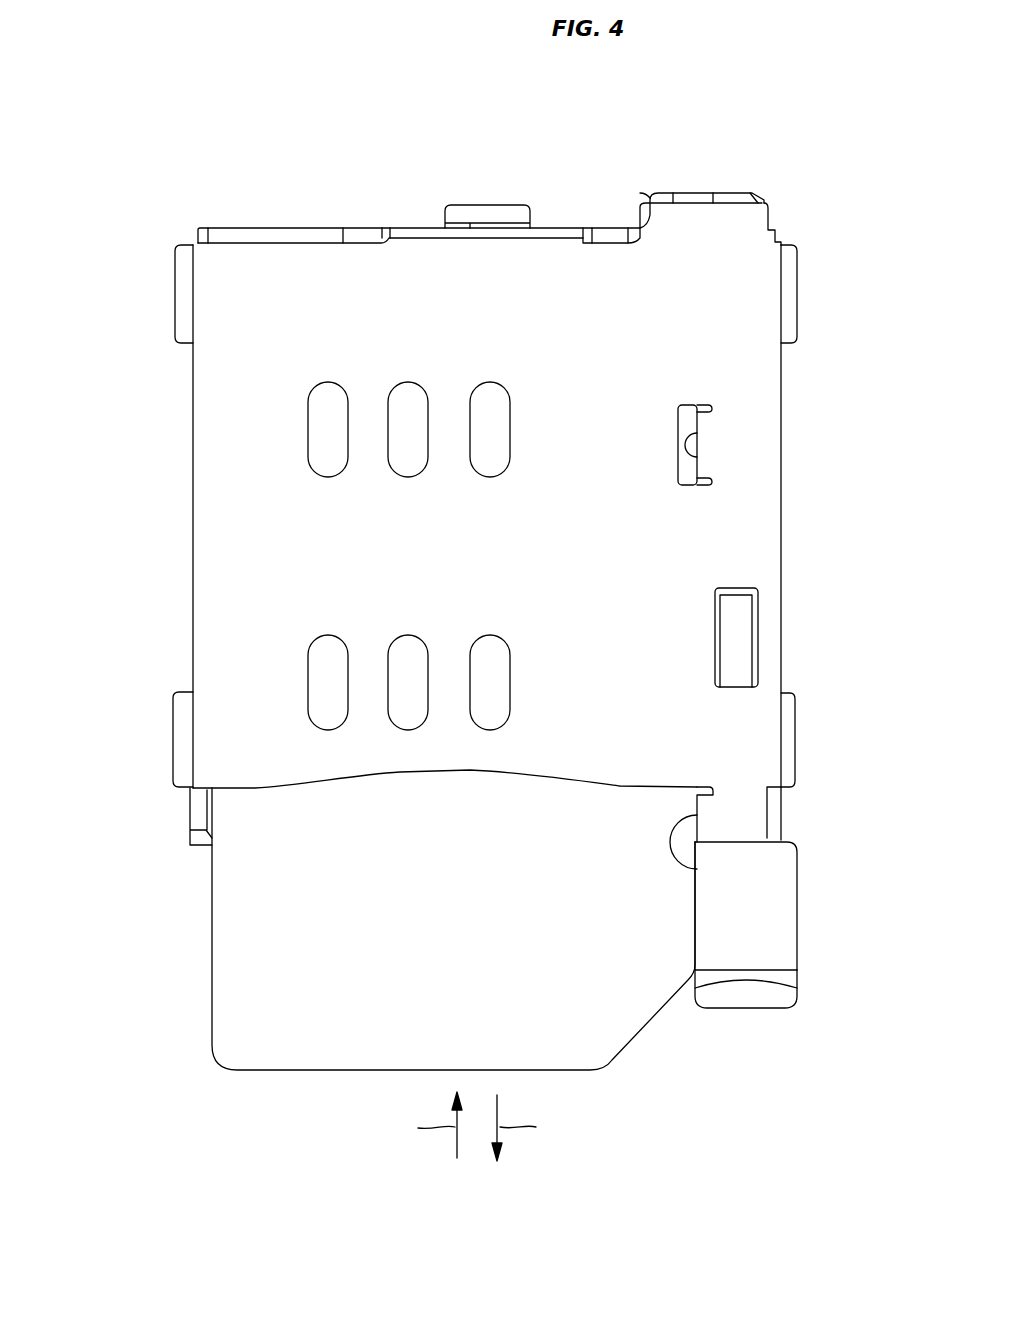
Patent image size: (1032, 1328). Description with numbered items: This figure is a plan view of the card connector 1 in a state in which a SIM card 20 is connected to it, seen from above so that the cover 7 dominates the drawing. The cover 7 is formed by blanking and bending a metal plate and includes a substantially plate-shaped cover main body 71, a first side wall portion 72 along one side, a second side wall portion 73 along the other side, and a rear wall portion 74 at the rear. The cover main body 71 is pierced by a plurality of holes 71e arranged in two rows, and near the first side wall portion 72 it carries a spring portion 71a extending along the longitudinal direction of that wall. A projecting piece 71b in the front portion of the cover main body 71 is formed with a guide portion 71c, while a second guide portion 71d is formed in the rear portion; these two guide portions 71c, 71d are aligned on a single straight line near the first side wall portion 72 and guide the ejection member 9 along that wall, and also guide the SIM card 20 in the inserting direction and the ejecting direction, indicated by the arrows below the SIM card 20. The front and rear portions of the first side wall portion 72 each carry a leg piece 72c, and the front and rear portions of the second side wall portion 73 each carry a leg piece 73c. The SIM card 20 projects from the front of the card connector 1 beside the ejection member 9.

The card connector 1 is at (406, 148).
The cover 7 is at (168, 488).
The ejection member 9 is at (757, 1031).
The SIM card 20 is at (347, 1102).
The cover main body 71 is at (551, 272).
The spring portion 71a is at (738, 635).
The projecting piece 71b is at (740, 808).
The guide portion 71c is at (697, 868).
The guide portion 71d is at (700, 437).
The holes 71e is at (472, 447).
The first side wall portion 72 is at (782, 562).
The leg piece 72c is at (797, 295).
The second side wall portion 73 is at (193, 562).
The leg piece 73c is at (178, 296).
The rear wall portion 74 is at (416, 232).